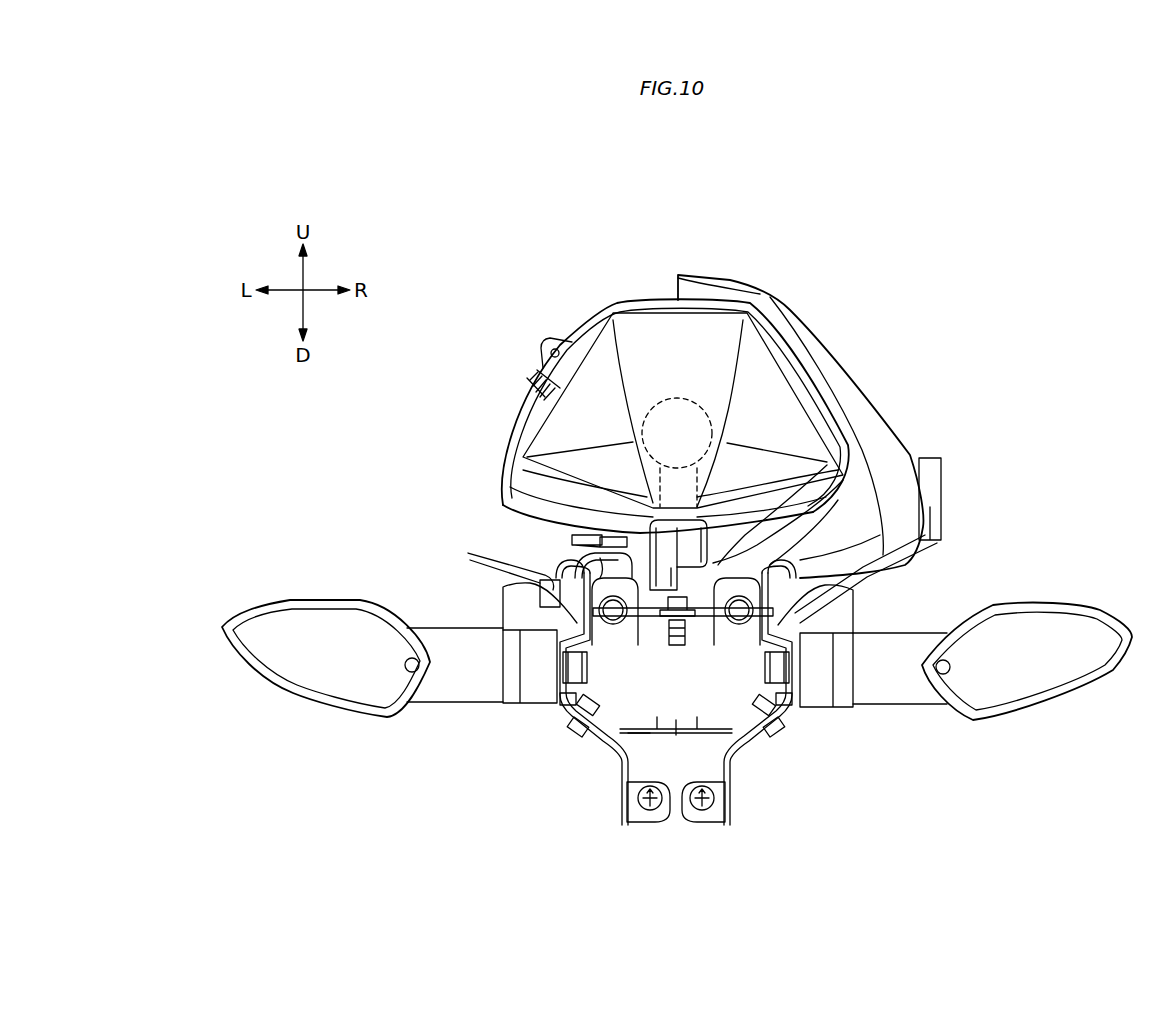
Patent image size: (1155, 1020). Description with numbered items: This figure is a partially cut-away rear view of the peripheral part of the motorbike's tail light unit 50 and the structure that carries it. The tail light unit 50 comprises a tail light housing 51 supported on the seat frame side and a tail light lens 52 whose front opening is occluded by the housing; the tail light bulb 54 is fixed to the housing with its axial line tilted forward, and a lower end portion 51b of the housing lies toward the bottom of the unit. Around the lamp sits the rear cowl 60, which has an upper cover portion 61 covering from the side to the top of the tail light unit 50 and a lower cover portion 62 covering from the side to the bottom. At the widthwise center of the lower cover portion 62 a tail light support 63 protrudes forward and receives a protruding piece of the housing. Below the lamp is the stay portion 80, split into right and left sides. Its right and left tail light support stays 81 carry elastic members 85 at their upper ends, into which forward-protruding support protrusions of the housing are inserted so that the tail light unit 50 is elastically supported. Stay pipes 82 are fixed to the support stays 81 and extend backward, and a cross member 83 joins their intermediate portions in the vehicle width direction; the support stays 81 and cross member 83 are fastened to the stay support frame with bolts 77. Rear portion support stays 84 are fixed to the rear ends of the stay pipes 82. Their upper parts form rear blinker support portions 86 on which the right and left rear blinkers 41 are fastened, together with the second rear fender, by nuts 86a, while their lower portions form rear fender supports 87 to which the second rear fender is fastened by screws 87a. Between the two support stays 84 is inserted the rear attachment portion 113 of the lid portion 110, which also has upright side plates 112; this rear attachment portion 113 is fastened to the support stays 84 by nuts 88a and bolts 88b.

The rear blinker 41 is at (275, 630).
The tail light unit 50 is at (630, 302).
The tail light housing 51 is at (540, 387).
The lower mounting portion 51b is at (522, 505).
The tail light lens 52 is at (713, 335).
The tail light bulb 54 is at (657, 400).
The rear cowl 60 is at (773, 293).
The upper cover portion 61 is at (792, 343).
The lower cover portion 62 is at (823, 463).
The tail light support 63 is at (670, 560).
The bolt 77 is at (757, 527).
The stay portion 80 is at (630, 571).
The tail light support stay 81 is at (575, 565).
The stay pipe 82 is at (545, 585).
The cross member 83 is at (717, 700).
The rear portion support stay 84 is at (555, 722).
The elastic member 85 is at (600, 542).
The rear blinker support portion 86 is at (557, 653).
The nut 86a is at (567, 663).
The rear fender support 87 is at (644, 815).
The screw 87a is at (636, 802).
The nut 88a is at (563, 700).
The bolt 88b is at (575, 735).
The lid portion 110 is at (648, 732).
The side plate 112 is at (573, 620).
The rear attachment portion 113 is at (680, 720).